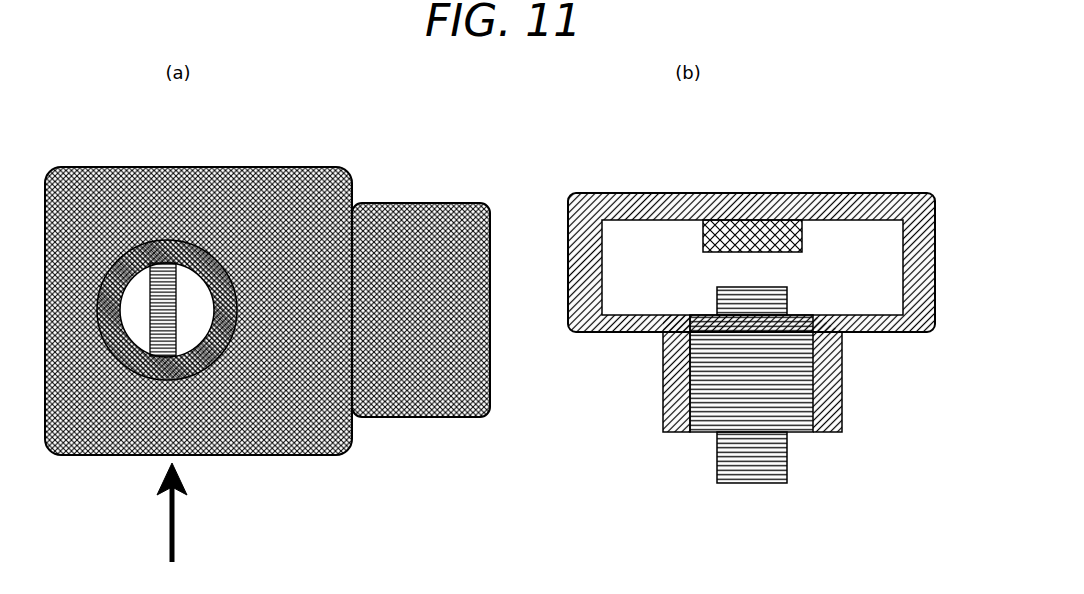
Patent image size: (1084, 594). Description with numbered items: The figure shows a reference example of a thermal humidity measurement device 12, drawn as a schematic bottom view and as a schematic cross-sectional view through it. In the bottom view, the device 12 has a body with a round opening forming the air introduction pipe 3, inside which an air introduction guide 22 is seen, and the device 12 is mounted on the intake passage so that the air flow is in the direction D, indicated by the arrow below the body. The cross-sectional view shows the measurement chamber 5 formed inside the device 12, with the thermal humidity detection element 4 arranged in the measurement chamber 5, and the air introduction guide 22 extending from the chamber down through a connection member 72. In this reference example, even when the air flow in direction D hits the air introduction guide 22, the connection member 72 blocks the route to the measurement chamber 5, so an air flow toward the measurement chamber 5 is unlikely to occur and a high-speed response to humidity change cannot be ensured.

The thermal humidity measurement device 12 is at (325, 458).
The air introduction guide 22 is at (165, 262).
The air introduction pipe 3 is at (193, 288).
The thermal humidity detection element 4 is at (742, 218).
The measurement chamber 5 is at (668, 232).
The connection member 72 is at (705, 432).
The direction of air flow D is at (175, 520).